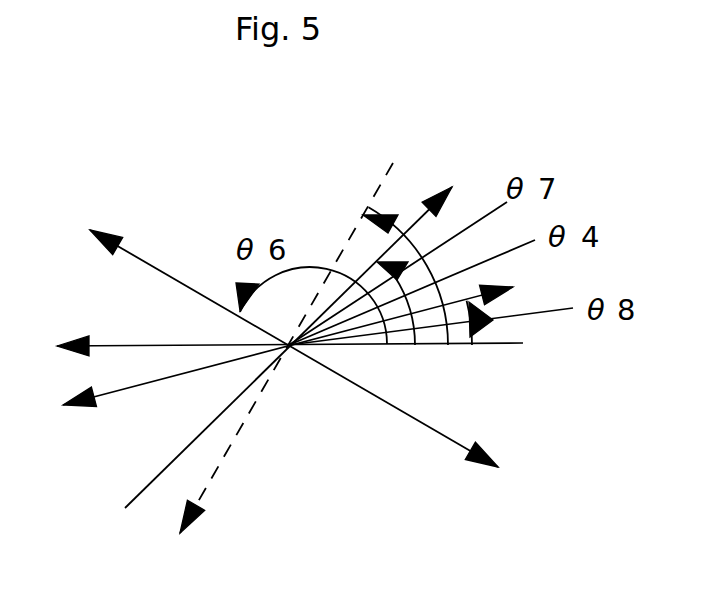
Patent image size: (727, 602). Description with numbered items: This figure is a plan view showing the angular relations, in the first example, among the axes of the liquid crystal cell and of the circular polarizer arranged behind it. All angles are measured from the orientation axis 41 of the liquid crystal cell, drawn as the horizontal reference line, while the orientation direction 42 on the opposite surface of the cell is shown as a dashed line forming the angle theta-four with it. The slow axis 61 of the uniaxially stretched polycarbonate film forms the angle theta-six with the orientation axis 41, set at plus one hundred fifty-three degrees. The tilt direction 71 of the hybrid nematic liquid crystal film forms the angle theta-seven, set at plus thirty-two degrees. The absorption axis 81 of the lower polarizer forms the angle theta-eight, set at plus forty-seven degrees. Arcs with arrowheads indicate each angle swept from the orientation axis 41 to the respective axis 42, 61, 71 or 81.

The orientation axis of the liquid crystal cell 41 is at (320, 345).
The orientation direction on the opposite surface 42 is at (304, 329).
The slow axis of the polycarbonate film 61 is at (323, 357).
The tilt direction of the liquid crystal film 71 is at (313, 328).
The absorption axis of the lower polarizer 81 is at (317, 334).